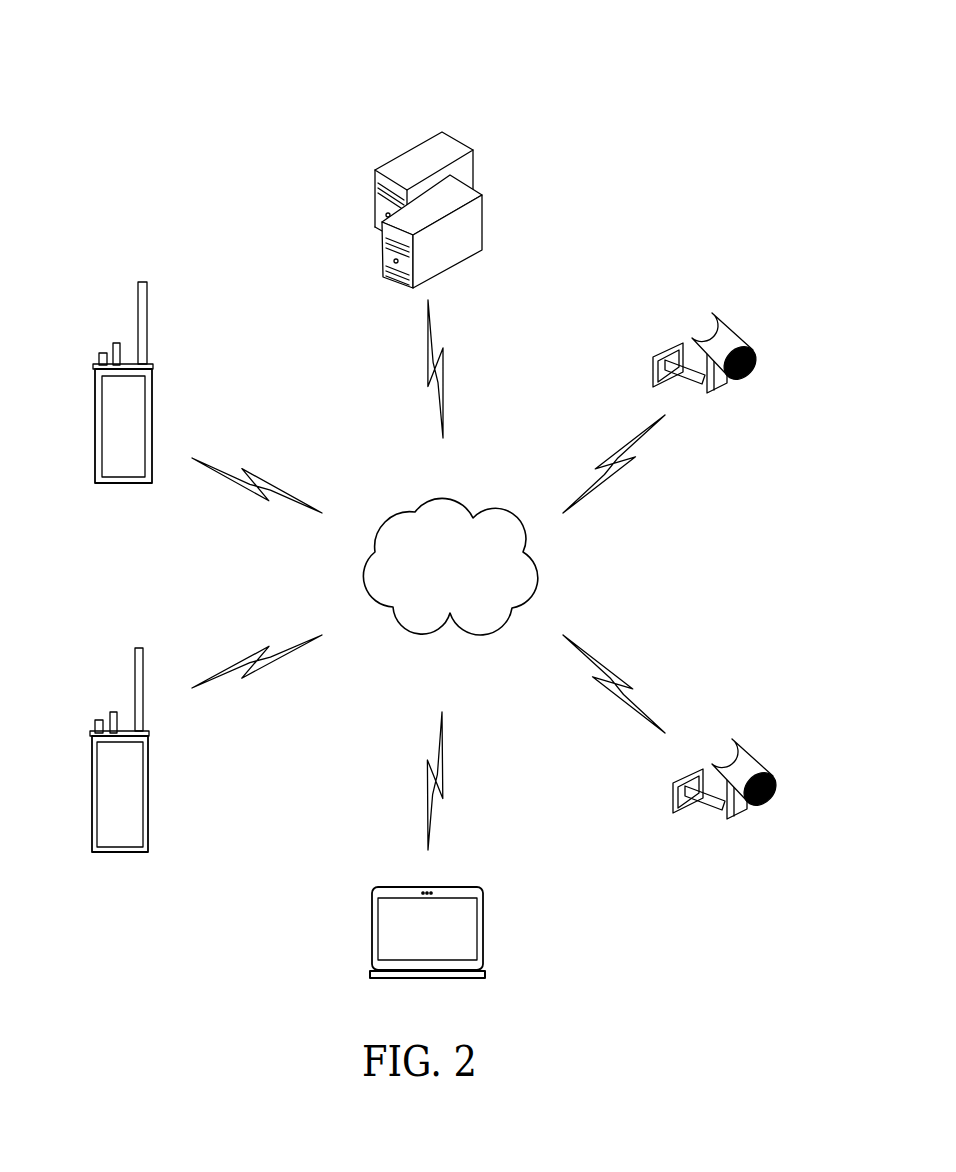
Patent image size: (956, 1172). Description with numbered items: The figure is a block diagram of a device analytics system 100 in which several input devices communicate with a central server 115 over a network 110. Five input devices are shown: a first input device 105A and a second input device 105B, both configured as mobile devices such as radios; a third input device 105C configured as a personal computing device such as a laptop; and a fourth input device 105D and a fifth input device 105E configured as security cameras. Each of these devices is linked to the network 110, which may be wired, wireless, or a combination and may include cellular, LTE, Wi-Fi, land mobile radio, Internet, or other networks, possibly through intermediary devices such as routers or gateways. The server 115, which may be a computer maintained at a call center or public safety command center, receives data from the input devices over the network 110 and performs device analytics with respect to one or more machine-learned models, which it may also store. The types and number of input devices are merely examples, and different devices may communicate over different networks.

The device analytics system 100 is at (198, 72).
The network 110 is at (478, 585).
The server 115 is at (410, 152).
The first input device 105A is at (122, 485).
The second input device 105B is at (148, 787).
The third input device 105C is at (483, 930).
The fourth input device 105D is at (738, 818).
The fifth input device 105E is at (702, 315).